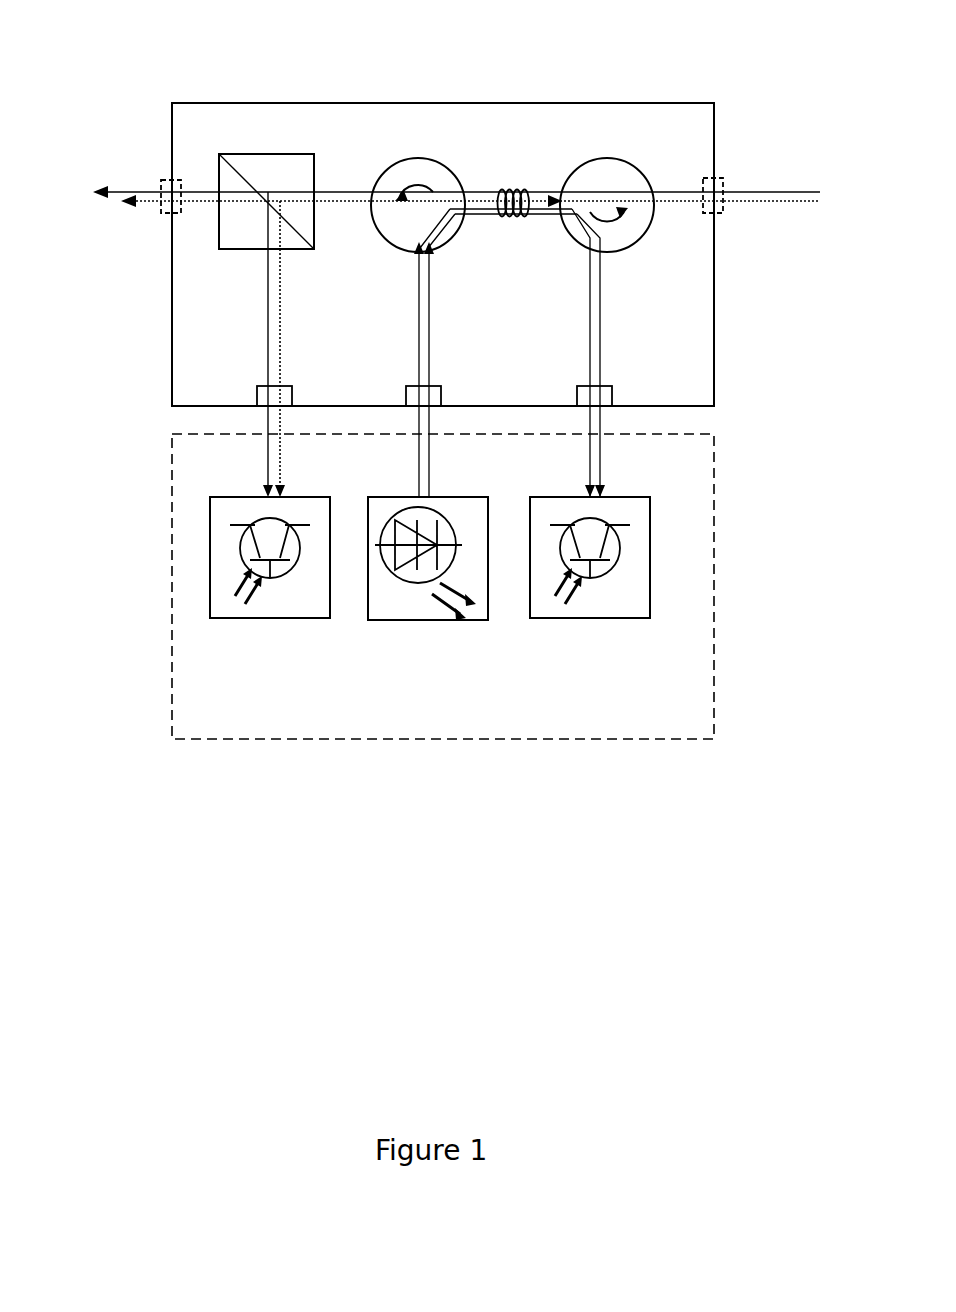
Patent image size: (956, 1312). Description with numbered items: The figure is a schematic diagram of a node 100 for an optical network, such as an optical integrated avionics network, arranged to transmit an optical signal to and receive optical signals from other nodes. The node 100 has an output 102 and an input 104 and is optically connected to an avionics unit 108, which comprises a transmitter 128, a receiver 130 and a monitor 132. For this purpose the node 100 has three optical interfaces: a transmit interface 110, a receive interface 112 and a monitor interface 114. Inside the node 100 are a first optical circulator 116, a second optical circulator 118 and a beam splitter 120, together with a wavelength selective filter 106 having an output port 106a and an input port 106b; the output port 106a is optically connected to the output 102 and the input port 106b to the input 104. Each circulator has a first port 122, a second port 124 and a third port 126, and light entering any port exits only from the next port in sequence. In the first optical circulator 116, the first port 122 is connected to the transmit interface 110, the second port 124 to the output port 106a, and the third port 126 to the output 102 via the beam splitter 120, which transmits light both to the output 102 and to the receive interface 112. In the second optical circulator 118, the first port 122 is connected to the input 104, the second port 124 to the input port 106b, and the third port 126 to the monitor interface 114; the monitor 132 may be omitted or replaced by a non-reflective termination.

The node 100 is at (686, 103).
The output 102 is at (162, 180).
The input 104 is at (723, 178).
The wavelength selective filter 106 is at (513, 188).
The output port 106a is at (493, 216).
The input port 106b is at (533, 188).
The avionics unit 108 is at (607, 739).
The transmit interface 110 is at (440, 386).
The receive interface 112 is at (290, 386).
The monitor interface 114 is at (610, 386).
The first optical circulator 116 is at (417, 157).
The second optical circulator 118 is at (650, 235).
The beam splitter 120 is at (258, 152).
The first port 122 is at (410, 252).
The second port 124 is at (459, 194).
The third port 126 is at (371, 192).
The transmitter 128 is at (425, 620).
The receiver 130 is at (272, 618).
The monitor 132 is at (590, 618).